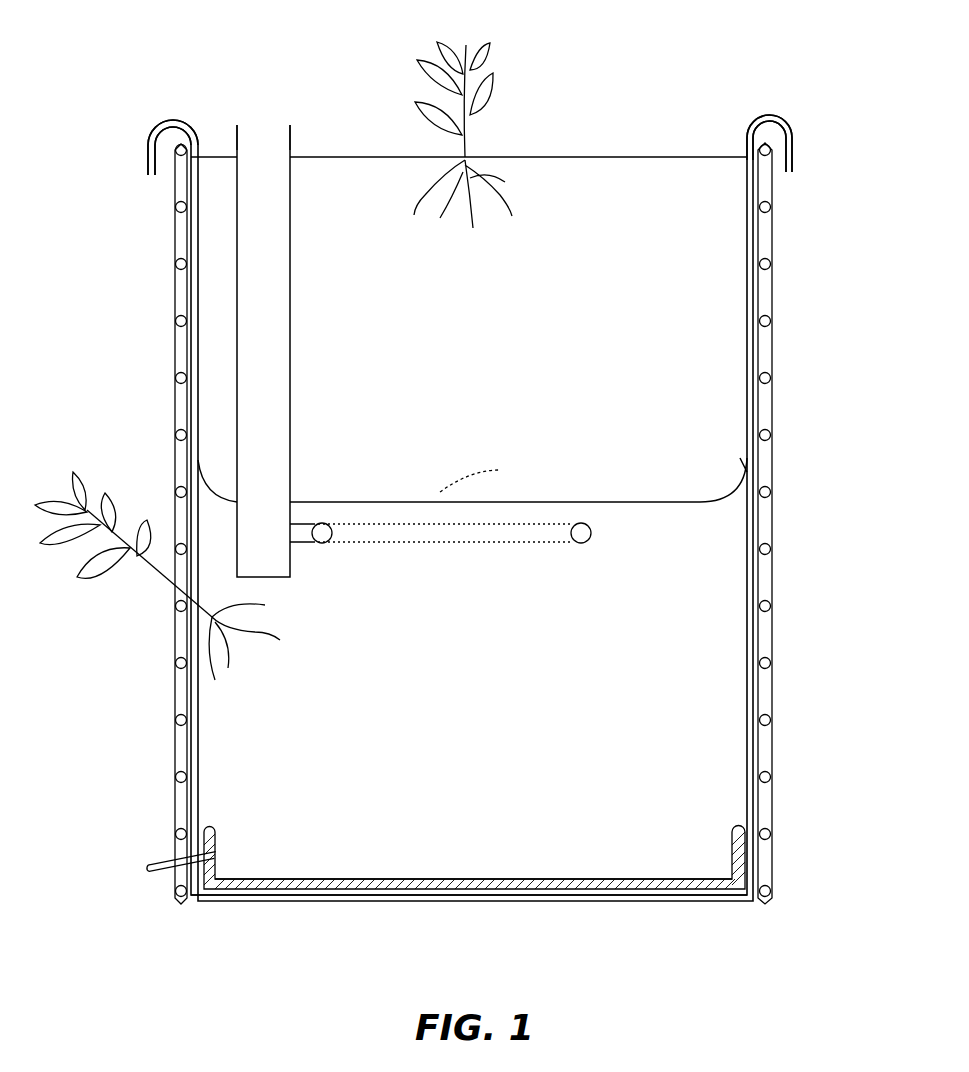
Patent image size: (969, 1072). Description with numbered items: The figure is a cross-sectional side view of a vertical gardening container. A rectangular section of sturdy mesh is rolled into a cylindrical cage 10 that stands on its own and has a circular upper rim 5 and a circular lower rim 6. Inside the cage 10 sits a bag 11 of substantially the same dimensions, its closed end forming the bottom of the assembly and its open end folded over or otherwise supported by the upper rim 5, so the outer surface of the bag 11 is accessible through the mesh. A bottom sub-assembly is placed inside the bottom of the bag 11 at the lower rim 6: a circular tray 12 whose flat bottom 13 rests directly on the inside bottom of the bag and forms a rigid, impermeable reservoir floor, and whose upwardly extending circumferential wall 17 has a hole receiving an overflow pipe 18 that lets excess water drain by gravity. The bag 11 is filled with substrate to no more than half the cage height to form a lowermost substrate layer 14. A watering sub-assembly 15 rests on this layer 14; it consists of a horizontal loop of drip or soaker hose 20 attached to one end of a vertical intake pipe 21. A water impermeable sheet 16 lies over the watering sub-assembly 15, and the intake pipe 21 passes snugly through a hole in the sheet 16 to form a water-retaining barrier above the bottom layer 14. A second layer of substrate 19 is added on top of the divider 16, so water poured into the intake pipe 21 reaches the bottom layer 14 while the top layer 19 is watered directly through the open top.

The upper rim 5 is at (178, 140).
The lower rim 6 is at (182, 902).
The cylindrical cage 10 is at (774, 338).
The water impermeable bag 11 is at (754, 694).
The tray 12 is at (479, 874).
The bottom of the tray 13 is at (388, 880).
The lowermost substrate layer 14 is at (626, 604).
The watering sub-assembly 15 is at (265, 128).
The water impermeable sheet 16 is at (565, 502).
The wall 17 is at (735, 858).
The overflow pipe 18 is at (167, 860).
The second layer of substrate 19 is at (608, 314).
The watering hose 20 is at (438, 492).
The intake pipe 21 is at (281, 168).